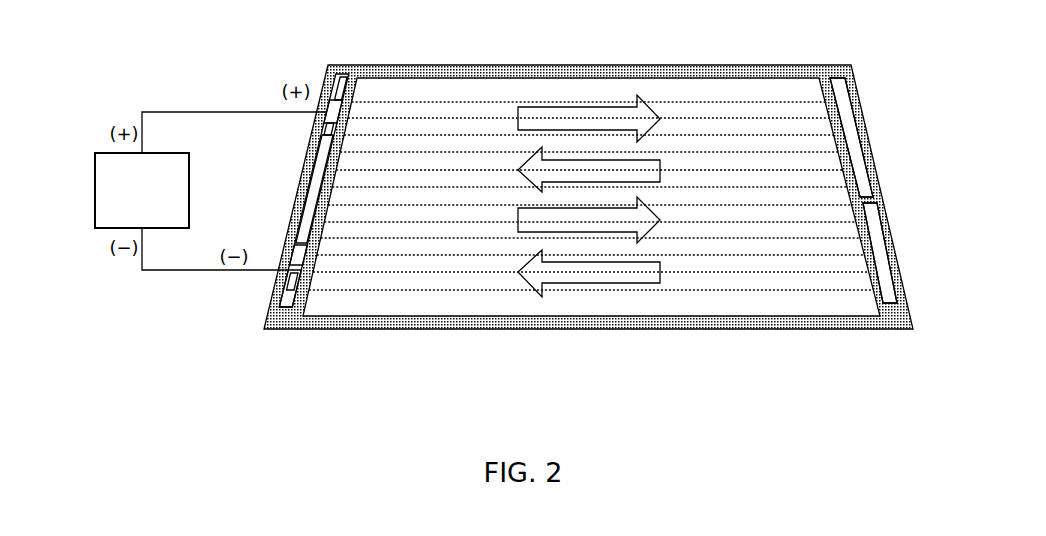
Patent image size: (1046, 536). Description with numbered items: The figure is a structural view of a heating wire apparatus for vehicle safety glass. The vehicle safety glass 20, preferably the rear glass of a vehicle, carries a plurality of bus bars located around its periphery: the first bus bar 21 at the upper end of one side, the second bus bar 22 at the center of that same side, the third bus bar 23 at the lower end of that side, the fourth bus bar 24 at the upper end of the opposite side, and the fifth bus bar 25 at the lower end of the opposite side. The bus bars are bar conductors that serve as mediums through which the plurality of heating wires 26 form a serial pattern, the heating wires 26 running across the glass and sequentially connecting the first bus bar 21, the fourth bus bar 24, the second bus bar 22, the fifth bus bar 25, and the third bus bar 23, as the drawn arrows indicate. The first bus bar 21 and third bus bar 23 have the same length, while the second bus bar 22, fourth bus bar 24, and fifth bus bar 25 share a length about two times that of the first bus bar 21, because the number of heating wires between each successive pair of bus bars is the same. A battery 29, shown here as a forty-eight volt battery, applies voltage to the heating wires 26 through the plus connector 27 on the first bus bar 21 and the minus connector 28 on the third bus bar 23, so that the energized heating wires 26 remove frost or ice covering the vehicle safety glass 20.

The vehicle safety glass 20 is at (610, 310).
The first bus bar 21 is at (341, 76).
The second bus bar 22 is at (316, 188).
The third bus bar 23 is at (289, 293).
The fourth bus bar 24 is at (843, 106).
The fifth bus bar 25 is at (875, 250).
The heating wires 26 is at (447, 290).
The plus connector 27 is at (328, 118).
The minus connector 28 is at (290, 258).
The battery 29 is at (95, 188).